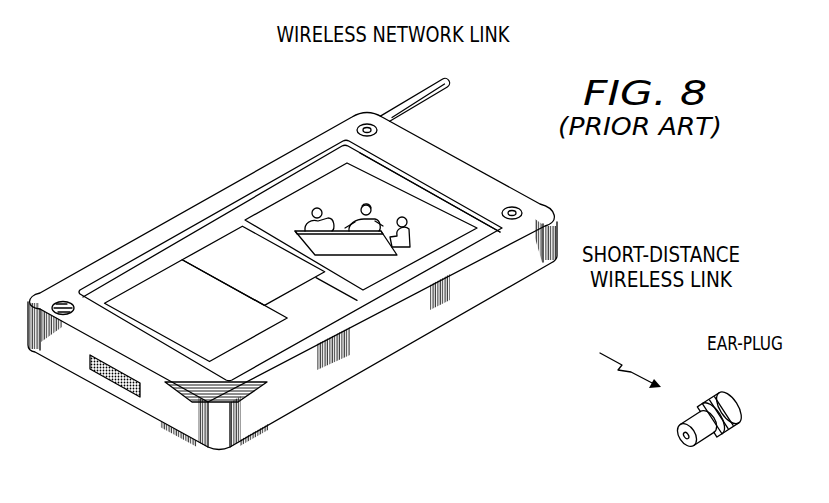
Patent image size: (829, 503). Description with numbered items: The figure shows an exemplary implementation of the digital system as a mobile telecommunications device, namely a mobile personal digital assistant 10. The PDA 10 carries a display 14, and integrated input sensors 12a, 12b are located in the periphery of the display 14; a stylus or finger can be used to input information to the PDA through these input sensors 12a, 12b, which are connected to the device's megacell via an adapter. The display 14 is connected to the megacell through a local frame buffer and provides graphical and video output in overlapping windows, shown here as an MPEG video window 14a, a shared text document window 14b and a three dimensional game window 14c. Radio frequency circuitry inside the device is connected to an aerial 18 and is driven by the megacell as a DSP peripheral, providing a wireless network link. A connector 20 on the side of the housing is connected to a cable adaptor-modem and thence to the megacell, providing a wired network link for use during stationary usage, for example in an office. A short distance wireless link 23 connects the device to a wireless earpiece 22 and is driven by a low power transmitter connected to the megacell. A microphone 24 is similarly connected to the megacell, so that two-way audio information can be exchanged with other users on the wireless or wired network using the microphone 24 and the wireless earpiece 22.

The mobile personal digital assistant 10 is at (453, 373).
The input sensor 12a is at (230, 207).
The input sensor 12b is at (430, 183).
The display 14 is at (98, 292).
The MPEG video window 14a is at (322, 193).
The shared text document window 14b is at (187, 250).
The three dimensional game window 14c is at (137, 280).
The aerial 18 is at (408, 100).
The connector 20 is at (115, 385).
The earpiece 22 is at (727, 398).
The short distance wireless link 23 is at (638, 348).
The microphone 24 is at (53, 302).